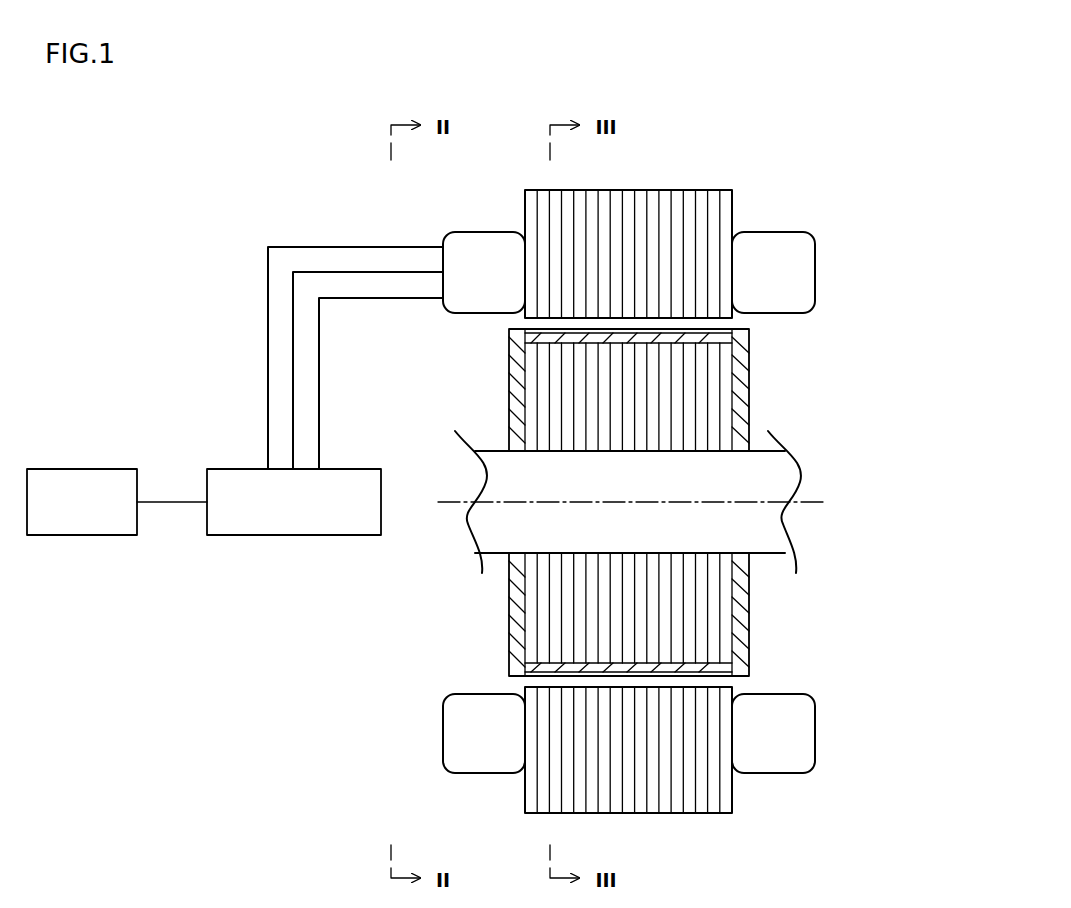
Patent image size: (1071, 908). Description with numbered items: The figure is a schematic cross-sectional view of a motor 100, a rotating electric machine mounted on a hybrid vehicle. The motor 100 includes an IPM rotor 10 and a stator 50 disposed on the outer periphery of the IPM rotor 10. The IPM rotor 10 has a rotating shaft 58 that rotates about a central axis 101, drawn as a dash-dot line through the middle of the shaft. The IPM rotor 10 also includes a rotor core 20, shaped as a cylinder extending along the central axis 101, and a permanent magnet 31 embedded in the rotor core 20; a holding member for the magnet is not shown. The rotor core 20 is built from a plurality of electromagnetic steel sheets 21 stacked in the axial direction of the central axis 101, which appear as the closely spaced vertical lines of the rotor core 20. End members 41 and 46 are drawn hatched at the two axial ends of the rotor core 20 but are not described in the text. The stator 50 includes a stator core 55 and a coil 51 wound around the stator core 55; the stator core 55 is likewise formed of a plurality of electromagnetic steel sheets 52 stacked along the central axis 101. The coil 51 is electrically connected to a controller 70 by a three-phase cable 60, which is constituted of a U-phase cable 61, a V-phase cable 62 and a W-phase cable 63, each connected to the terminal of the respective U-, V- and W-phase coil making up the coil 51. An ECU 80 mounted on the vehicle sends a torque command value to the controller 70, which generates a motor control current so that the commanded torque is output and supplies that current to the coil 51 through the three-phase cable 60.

The motor 100 is at (814, 137).
The IPM rotor 10 is at (644, 504).
The rotor core 20 is at (748, 403).
The electromagnetic steel sheets 21 is at (543, 410).
The permanent magnet 31 is at (748, 338).
The end plate 41 is at (519, 380).
The end plate 46 is at (748, 372).
The stator 50 is at (653, 502).
The coil 51 is at (472, 297).
The electromagnetic steel sheets 52 is at (676, 200).
The stator core 55 is at (525, 203).
The rotating shaft 58 is at (757, 479).
The three-phase cable 60 is at (343, 312).
The U-phase cable 61 is at (330, 246).
The V-phase cable 62 is at (306, 270).
The W-phase cable 63 is at (318, 324).
The controller 70 is at (352, 469).
The ECU 80 is at (114, 469).
The central axis 101 is at (745, 508).